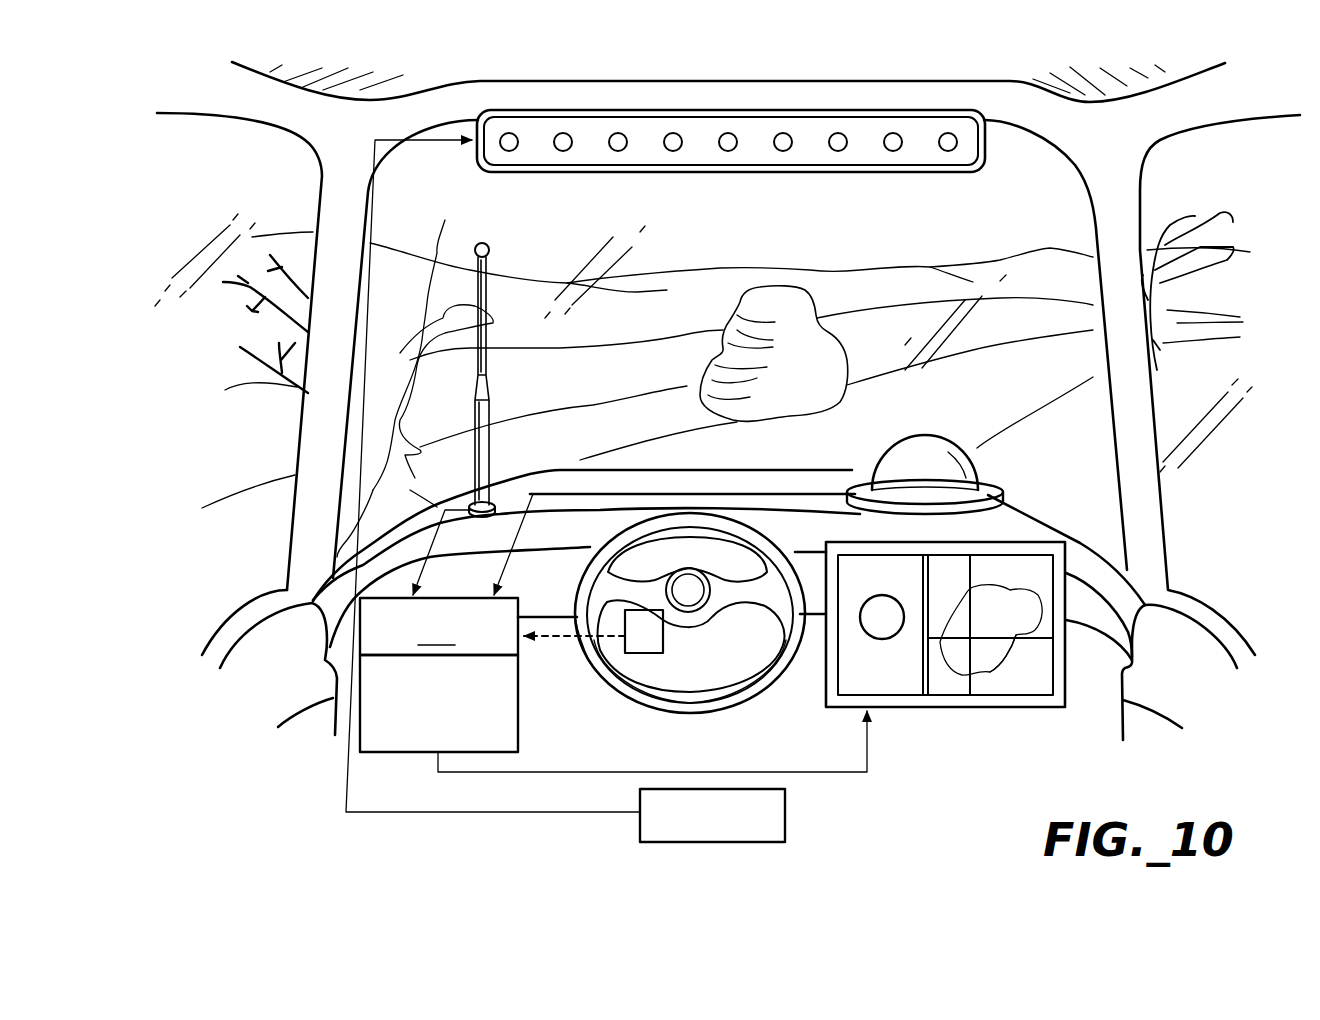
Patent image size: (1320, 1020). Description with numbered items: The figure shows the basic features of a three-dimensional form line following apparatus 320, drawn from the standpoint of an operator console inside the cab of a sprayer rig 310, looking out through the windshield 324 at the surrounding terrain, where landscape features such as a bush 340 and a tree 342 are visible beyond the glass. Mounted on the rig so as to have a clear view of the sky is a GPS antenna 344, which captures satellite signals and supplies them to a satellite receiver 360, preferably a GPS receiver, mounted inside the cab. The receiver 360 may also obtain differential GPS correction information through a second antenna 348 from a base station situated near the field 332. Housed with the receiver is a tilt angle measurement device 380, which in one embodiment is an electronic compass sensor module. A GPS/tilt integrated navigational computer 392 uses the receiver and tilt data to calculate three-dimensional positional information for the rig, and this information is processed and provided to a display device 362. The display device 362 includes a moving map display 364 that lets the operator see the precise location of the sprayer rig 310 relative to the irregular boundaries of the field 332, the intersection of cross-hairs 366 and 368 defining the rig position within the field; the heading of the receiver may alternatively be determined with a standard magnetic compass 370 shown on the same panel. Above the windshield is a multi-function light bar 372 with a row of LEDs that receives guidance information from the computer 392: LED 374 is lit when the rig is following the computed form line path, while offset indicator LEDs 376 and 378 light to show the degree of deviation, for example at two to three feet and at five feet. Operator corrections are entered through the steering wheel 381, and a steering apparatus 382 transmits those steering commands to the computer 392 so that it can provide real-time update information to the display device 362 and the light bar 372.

The sprayer rig 310 is at (245, 690).
The 3-dimensional form line following apparatus 320 is at (430, 843).
The windshield 324 is at (445, 220).
The field 332 is at (985, 670).
The bush / landmark 340 is at (758, 422).
The tree 342 is at (1195, 216).
The GPS antenna 344 is at (882, 453).
The antenna 348 is at (485, 243).
The satellite receiver 360 is at (518, 655).
The display device 362 is at (942, 632).
The moving map display 364 is at (1043, 581).
The cross-hair 366 is at (968, 590).
The cross-hair 368 is at (1027, 637).
The magnetic compass 370 is at (875, 633).
The multi-function light bar 372 is at (731, 162).
The LED 374 is at (728, 152).
The offset indicator LED 376 is at (783, 152).
The offset indicator LED 378 is at (812, 173).
The tilt angle measurement device 380 is at (518, 702).
The steering wheel 381 is at (713, 712).
The steering apparatus 382 is at (641, 655).
The GPS/tilt integrated navigational computer 392 is at (785, 812).